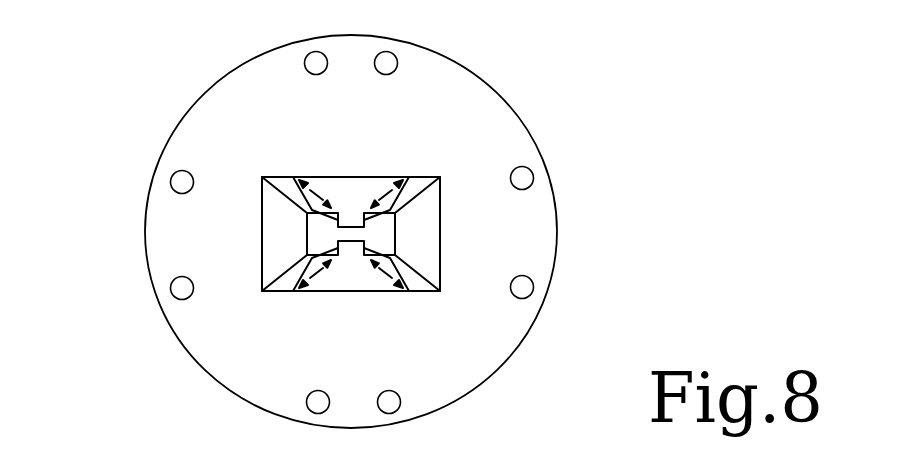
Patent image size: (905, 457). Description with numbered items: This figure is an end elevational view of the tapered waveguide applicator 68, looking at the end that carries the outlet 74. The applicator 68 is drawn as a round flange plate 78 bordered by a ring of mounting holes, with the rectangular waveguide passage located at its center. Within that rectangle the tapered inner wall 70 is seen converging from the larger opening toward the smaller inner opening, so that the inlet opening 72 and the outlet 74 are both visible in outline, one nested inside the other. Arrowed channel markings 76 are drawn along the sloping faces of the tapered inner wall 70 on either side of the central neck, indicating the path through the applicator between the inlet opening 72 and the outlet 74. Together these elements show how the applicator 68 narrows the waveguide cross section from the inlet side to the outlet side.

The tapered waveguide applicator 68 is at (584, 180).
The tapered inner wall 70 is at (283, 242).
The inlet opening 72 is at (395, 238).
The outlet 74 is at (272, 264).
The flow channels 76 is at (347, 192).
The mounting flange 78 is at (450, 102).